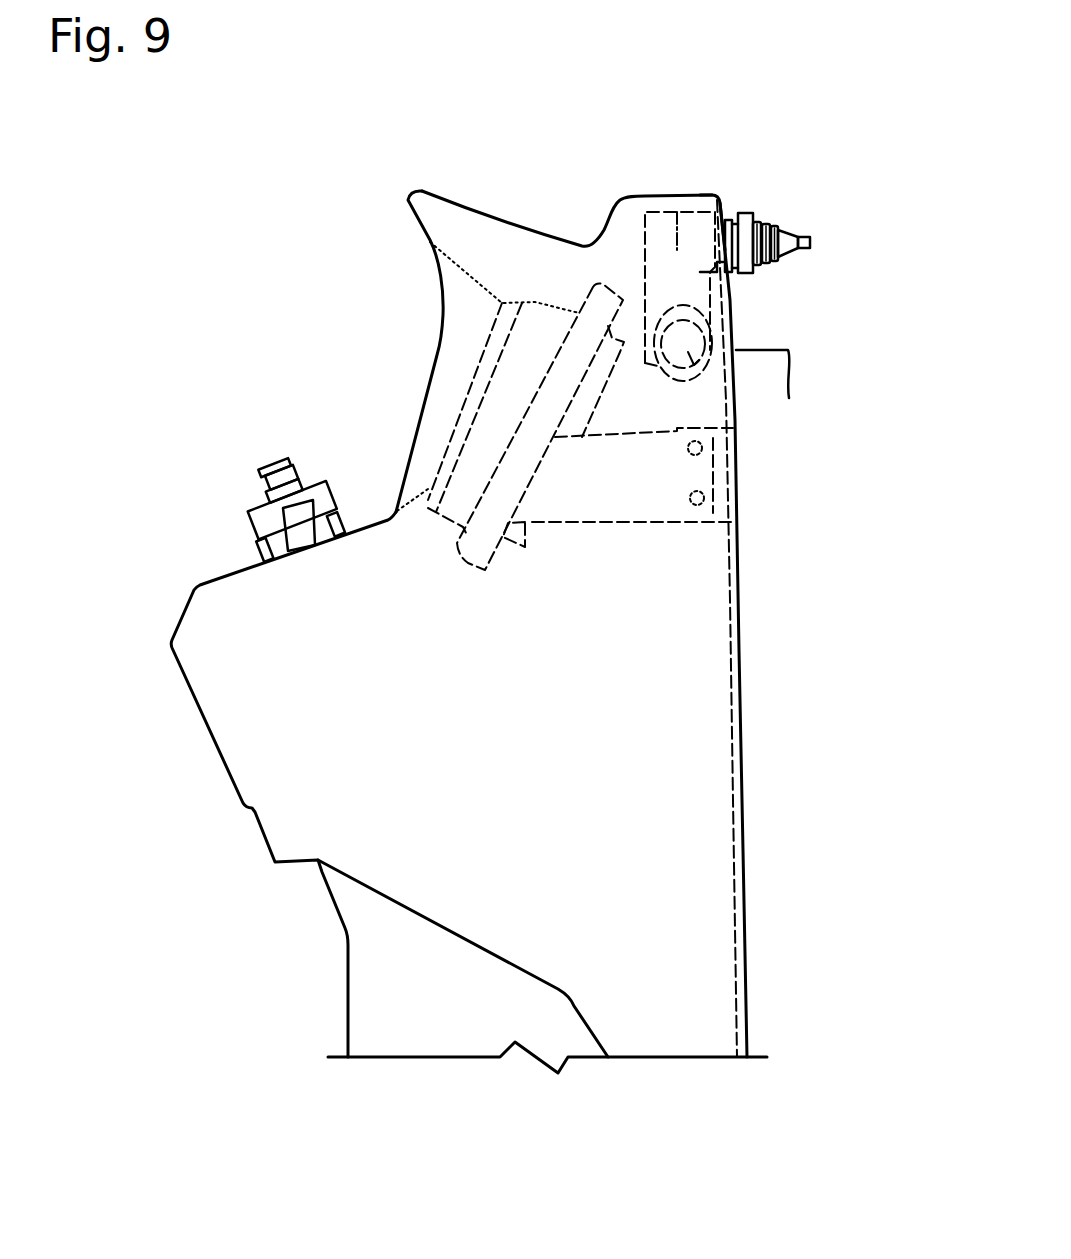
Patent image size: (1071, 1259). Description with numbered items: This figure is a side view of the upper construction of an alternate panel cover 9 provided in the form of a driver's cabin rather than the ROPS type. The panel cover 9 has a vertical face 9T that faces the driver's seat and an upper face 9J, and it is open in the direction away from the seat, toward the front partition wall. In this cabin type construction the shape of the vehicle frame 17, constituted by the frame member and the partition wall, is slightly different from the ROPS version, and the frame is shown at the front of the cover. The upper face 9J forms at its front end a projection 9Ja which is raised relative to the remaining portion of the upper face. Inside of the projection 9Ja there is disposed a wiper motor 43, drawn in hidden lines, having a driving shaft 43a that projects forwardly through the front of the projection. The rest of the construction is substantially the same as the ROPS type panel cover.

The panel cover 9 is at (228, 600).
The upper face 9J is at (531, 214).
The projection 9Ja is at (690, 188).
The vertical face 9T is at (397, 390).
The vehicle frame 17 is at (742, 720).
The wiper motor 43 is at (698, 376).
The driving shaft 43a is at (806, 249).